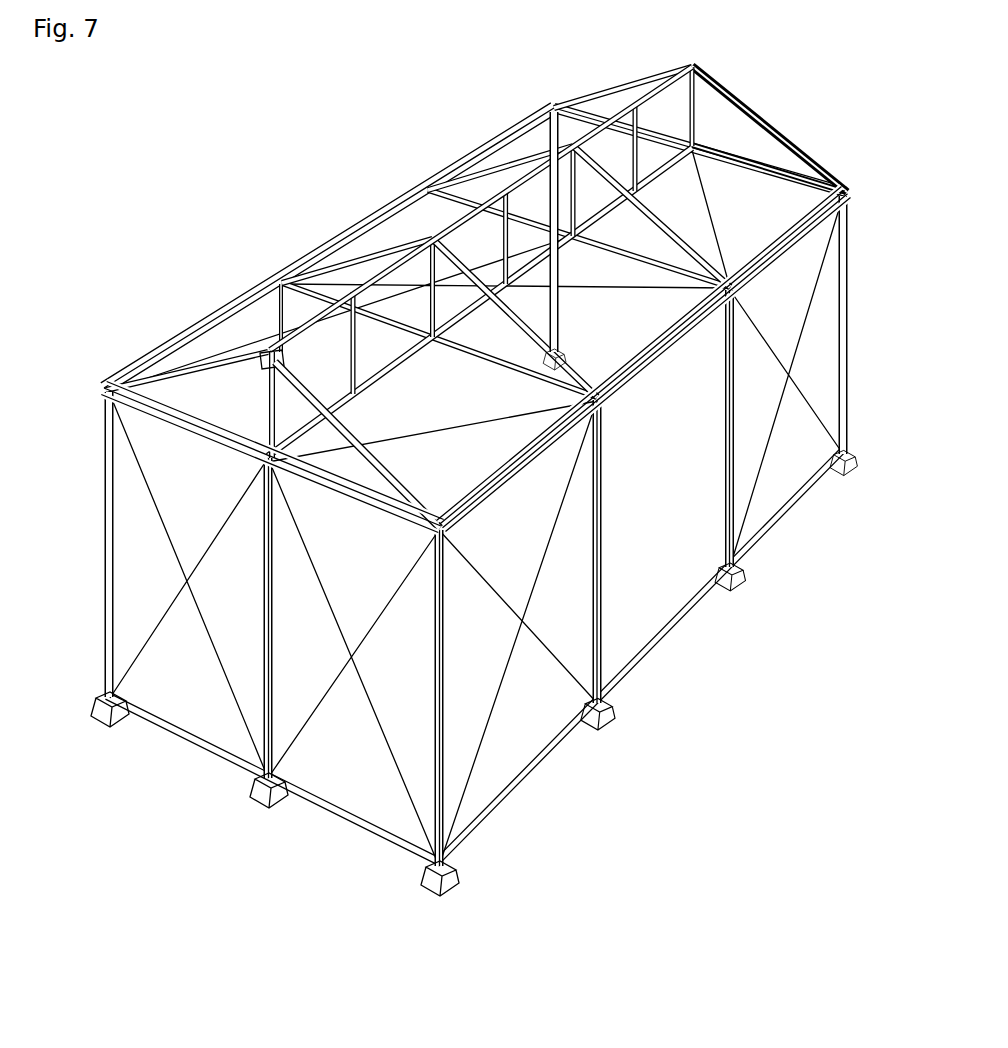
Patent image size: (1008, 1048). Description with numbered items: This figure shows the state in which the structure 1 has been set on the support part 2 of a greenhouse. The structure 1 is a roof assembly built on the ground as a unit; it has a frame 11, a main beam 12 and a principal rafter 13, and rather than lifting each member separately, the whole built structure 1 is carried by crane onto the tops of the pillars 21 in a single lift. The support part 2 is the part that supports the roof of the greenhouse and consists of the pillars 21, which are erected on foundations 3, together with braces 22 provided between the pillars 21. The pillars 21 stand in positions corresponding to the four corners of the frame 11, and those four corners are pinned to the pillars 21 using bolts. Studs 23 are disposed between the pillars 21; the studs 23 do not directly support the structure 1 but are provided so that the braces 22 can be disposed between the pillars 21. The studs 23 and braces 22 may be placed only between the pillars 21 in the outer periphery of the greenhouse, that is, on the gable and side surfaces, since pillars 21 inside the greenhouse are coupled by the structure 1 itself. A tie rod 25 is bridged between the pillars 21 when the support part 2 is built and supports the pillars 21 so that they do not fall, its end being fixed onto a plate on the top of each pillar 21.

The structure 1 is at (595, 82).
The support part 2 is at (100, 470).
The foundation 3 is at (850, 448).
The frame 11 is at (233, 306).
The main beam 12 is at (410, 361).
The principal rafter 13 is at (746, 113).
The pillar 21 is at (557, 318).
The brace 22 is at (754, 331).
The stud 23 is at (725, 455).
The tie rod 25 is at (650, 380).